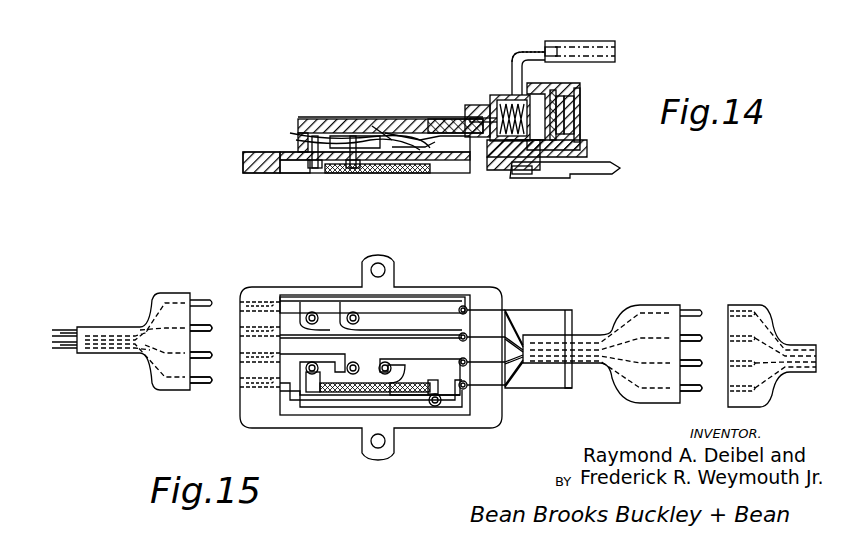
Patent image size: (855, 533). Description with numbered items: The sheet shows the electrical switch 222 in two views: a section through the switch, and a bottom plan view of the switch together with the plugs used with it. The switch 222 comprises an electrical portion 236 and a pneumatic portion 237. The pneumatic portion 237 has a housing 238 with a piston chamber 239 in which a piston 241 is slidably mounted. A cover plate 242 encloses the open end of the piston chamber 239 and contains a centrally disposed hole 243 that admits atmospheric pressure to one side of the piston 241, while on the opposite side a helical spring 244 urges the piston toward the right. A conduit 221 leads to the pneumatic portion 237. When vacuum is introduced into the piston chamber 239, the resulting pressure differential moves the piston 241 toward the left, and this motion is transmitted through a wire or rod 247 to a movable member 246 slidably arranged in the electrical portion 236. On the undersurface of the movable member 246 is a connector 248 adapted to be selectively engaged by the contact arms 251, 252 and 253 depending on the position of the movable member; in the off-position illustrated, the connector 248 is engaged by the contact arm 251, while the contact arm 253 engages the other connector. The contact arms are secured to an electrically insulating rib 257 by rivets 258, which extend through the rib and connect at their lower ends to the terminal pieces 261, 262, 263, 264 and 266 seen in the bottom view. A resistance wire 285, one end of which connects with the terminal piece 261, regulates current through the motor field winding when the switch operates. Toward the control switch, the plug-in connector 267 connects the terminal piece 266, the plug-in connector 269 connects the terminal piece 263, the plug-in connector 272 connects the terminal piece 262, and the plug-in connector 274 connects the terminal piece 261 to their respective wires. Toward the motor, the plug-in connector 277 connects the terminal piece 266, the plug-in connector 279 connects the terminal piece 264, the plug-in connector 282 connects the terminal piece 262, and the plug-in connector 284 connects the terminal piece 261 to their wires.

In FIG. 14, the cable 221 is at (588, 42).
In FIG. 14, the electrical switch 222 is at (303, 119).
In FIG. 14, the electrical portion 236 is at (297, 125).
In FIG. 14, the pneumatic portion 237 is at (512, 70).
In FIG. 14, the housing 238 is at (553, 85).
In FIG. 14, the piston chamber 239 is at (548, 160).
In FIG. 14, the piston 241 is at (566, 103).
In FIG. 14, the cover plate 242 is at (577, 145).
In FIG. 14, the hole 243 is at (580, 124).
In FIG. 14, the helical spring 244 is at (503, 96).
In FIG. 14, the movable member 246 is at (400, 134).
In FIG. 14, the wire or rod 247 is at (472, 108).
In FIG. 14, the connector 248 is at (377, 120).
In FIG. 14, the contact arm 251 is at (372, 135).
In FIG. 14, the contact arm 252 is at (313, 117).
In FIG. 14, the contact arm 253 is at (440, 128).
In FIG. 14, the electrically insulating rib 257 is at (300, 138).
In FIG. 14, the rivets 258 is at (338, 175).
In FIG. 14, the resistance wire 285 is at (390, 175).
In FIG. 15, the resistance wire 285 is at (365, 398).
In FIG. 15, the terminal piece 261 is at (335, 297).
In FIG. 15, the terminal piece 262 is at (323, 332).
In FIG. 15, the terminal piece 263 is at (425, 360).
In FIG. 15, the terminal piece 264 is at (340, 375).
In FIG. 15, the terminal piece 266 is at (397, 410).
In FIG. 15, the plug-in connector 267 is at (720, 389).
In FIG. 15, the plug-in connector 269 is at (720, 363).
In FIG. 15, the plug-in connector 272 is at (720, 337).
In FIG. 15, the plug-in connector 274 is at (702, 312).
In FIG. 15, the plug-in connector 277 is at (236, 378).
In FIG. 15, the plug-in connector 279 is at (236, 352).
In FIG. 15, the plug-in connector 282 is at (232, 324).
In FIG. 15, the plug-in connector 284 is at (236, 280).